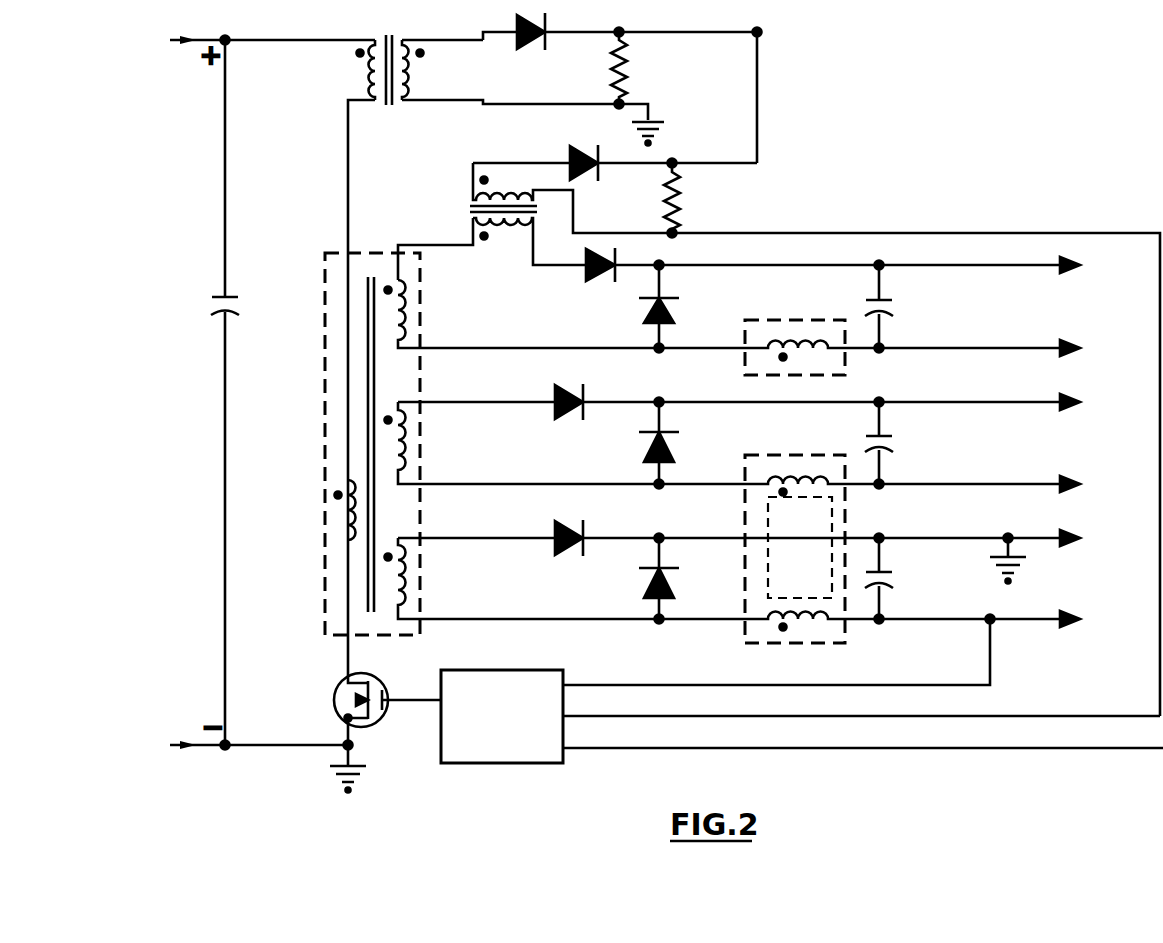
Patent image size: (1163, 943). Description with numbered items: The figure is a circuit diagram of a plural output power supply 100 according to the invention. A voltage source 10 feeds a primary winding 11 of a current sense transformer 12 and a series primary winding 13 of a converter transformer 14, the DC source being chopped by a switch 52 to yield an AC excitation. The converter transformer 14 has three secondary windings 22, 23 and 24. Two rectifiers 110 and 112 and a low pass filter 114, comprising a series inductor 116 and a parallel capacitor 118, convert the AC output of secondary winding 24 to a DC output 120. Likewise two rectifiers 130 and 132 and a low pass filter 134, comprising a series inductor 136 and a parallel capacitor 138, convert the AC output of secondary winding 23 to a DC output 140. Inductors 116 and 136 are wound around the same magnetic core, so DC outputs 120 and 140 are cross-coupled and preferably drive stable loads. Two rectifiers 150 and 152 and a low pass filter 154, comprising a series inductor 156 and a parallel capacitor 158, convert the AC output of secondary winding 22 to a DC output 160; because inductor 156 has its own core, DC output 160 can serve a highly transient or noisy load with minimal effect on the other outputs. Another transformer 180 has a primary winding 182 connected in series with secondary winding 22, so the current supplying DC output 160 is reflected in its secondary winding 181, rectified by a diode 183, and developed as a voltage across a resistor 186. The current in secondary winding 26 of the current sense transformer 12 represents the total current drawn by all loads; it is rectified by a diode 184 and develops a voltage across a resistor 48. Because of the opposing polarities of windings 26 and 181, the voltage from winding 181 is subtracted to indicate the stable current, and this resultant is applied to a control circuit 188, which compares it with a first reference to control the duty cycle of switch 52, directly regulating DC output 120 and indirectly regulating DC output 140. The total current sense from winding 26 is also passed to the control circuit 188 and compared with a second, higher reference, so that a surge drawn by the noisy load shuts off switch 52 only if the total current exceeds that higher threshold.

The voltage source 10 is at (192, 40).
The primary winding 11 is at (372, 74).
The current sense transformer 12 is at (398, 40).
The primary winding 13 is at (350, 540).
The converter transformer 14 is at (320, 358).
The secondary winding 22 is at (412, 296).
The secondary winding 23 is at (412, 431).
The secondary winding 24 is at (412, 566).
The secondary winding 26 is at (412, 70).
The resistor 48 is at (631, 62).
The switch 52 is at (368, 728).
The power supply 100 is at (186, 436).
The rectifier 110 is at (590, 534).
The rectifier 112 is at (648, 592).
The low pass filter 114 is at (895, 625).
The series inductor 116 is at (770, 610).
The parallel capacitor 118 is at (881, 572).
The DC output 120 is at (1045, 616).
The rectifier 130 is at (590, 398).
The rectifier 132 is at (648, 456).
The low pass filter 134 is at (895, 490).
The series inductor 136 is at (790, 474).
The parallel capacitor 138 is at (868, 436).
The DC output 140 is at (1045, 400).
The rectifier 150 is at (576, 275).
The rectifier 152 is at (672, 316).
The low pass filter 154 is at (892, 354).
The series inductor 156 is at (776, 335).
The parallel capacitor 158 is at (873, 296).
The DC output 160 is at (1045, 268).
The transformer 180 is at (521, 212).
The secondary winding 181 is at (478, 194).
The primary winding 182 is at (470, 224).
The diode 183 is at (578, 178).
The diode 184 is at (527, 50).
The resistor 186 is at (683, 192).
The control circuit 188 is at (520, 765).